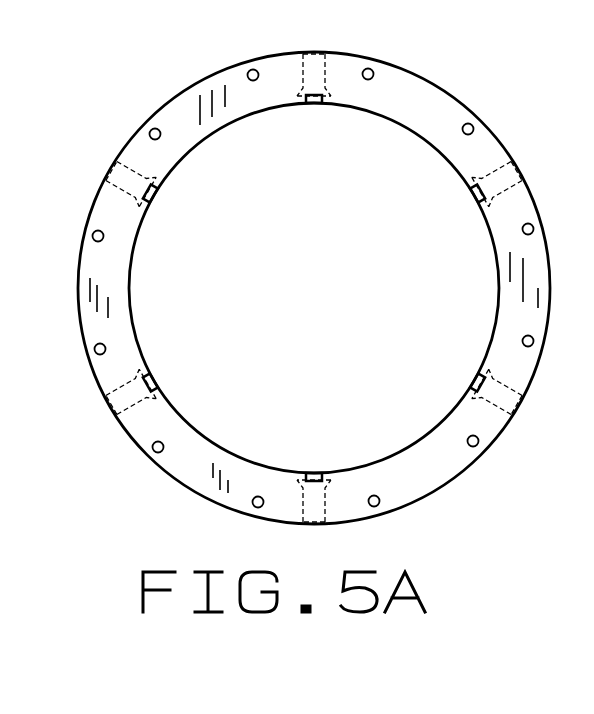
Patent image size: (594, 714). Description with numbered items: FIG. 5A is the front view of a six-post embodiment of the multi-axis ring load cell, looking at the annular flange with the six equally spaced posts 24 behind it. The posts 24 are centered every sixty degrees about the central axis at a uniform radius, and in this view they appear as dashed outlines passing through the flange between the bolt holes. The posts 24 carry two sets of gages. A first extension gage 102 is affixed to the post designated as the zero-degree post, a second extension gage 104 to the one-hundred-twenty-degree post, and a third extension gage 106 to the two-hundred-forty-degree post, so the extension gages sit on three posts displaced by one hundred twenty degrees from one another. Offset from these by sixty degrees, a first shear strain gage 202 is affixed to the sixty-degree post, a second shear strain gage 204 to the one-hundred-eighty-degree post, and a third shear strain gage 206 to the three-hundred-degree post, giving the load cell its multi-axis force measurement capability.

The posts 24 is at (310, 72).
The first extension gage 102 is at (302, 100).
The second extension gage 104 is at (473, 385).
The third extension gage 106 is at (150, 378).
The first shear strain gage 202 is at (468, 190).
The second shear strain gage 204 is at (327, 478).
The third shear strain gage 206 is at (155, 187).